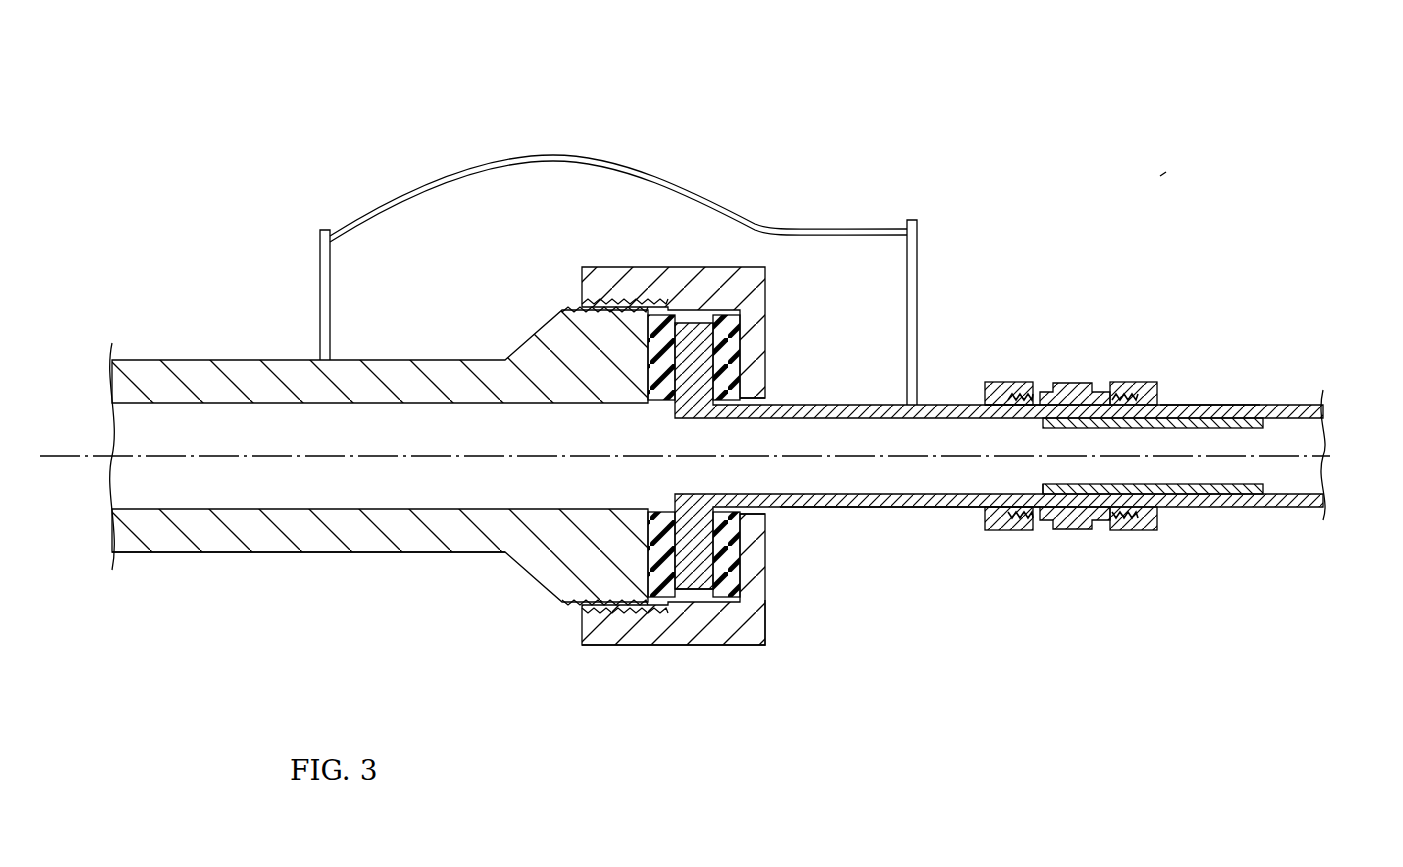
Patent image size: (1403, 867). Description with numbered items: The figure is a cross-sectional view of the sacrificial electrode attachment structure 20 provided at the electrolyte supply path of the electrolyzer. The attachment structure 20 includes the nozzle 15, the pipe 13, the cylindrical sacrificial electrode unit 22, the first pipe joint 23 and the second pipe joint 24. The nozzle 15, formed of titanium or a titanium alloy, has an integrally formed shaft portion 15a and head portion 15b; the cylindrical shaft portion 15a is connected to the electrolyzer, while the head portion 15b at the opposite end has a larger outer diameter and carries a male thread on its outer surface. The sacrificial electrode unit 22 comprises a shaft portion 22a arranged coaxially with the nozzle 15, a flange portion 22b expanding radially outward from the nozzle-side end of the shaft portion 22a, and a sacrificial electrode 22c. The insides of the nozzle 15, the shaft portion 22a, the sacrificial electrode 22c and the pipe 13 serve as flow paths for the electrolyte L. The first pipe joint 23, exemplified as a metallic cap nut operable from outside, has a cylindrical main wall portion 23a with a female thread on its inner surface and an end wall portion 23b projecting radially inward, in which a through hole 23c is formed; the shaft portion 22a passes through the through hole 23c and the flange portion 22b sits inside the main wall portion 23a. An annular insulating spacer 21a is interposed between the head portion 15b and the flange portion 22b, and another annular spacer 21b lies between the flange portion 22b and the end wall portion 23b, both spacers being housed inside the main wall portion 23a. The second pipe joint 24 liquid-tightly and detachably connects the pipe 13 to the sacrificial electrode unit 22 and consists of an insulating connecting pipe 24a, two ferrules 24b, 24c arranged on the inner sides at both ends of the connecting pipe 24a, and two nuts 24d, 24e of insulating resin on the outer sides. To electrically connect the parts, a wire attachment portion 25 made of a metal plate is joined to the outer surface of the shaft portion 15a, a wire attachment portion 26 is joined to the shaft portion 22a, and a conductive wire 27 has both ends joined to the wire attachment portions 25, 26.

The pipe 13 is at (1290, 430).
The nozzle 15 is at (178, 360).
The shaft portion 15a is at (213, 553).
The head portion 15b is at (637, 307).
The sacrificial electrode attachment structure 20 is at (1163, 173).
The annular spacer 21a is at (665, 317).
The annular spacer 21b is at (748, 315).
The sacrificial electrode unit 22 is at (820, 507).
The shaft portion 22a is at (843, 507).
The flange portion 22b is at (698, 587).
The sacrificial electrode 22c is at (1047, 487).
The first pipe joint 23 is at (584, 268).
The main wall portion 23a is at (582, 283).
The end wall portion 23b is at (765, 610).
The through hole 23c is at (752, 402).
The second pipe joint 24 is at (1091, 490).
The connecting pipe 24a is at (1078, 383).
The ferrule 24b is at (1033, 412).
The ferrule 24c is at (1203, 405).
The nut 24d is at (1010, 383).
The nut 24e is at (1135, 383).
The wire attachment portion 25 is at (318, 280).
The wire attachment portion 26 is at (918, 262).
The wire 27 is at (390, 197).
The electrolyte L is at (1323, 394).